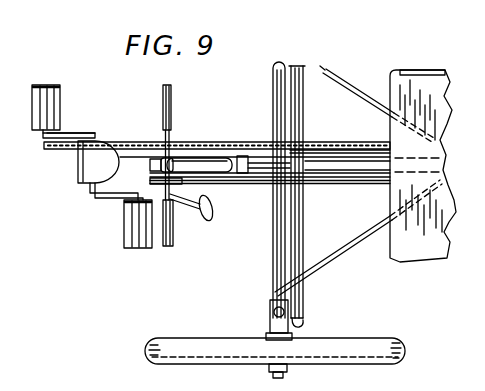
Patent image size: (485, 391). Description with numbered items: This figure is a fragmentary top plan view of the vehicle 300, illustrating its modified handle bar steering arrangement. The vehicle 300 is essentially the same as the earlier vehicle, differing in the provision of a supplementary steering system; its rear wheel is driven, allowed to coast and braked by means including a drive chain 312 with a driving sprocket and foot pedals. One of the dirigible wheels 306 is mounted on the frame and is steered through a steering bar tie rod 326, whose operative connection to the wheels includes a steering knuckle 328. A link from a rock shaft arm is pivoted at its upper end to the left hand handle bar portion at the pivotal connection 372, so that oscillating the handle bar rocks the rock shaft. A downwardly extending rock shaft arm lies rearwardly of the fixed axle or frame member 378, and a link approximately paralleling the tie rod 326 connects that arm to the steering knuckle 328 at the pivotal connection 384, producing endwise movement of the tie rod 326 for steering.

The vehicle 300 is at (356, 81).
The dirigible wheel 306 is at (405, 348).
The drive chain 312 is at (208, 141).
The steering bar tie rod 326 is at (305, 305).
The steering knuckle 328 is at (305, 327).
The pivotal connection 372 is at (161, 197).
The fixed axle or frame member 378 is at (279, 250).
The pivotal connection 384 is at (268, 309).